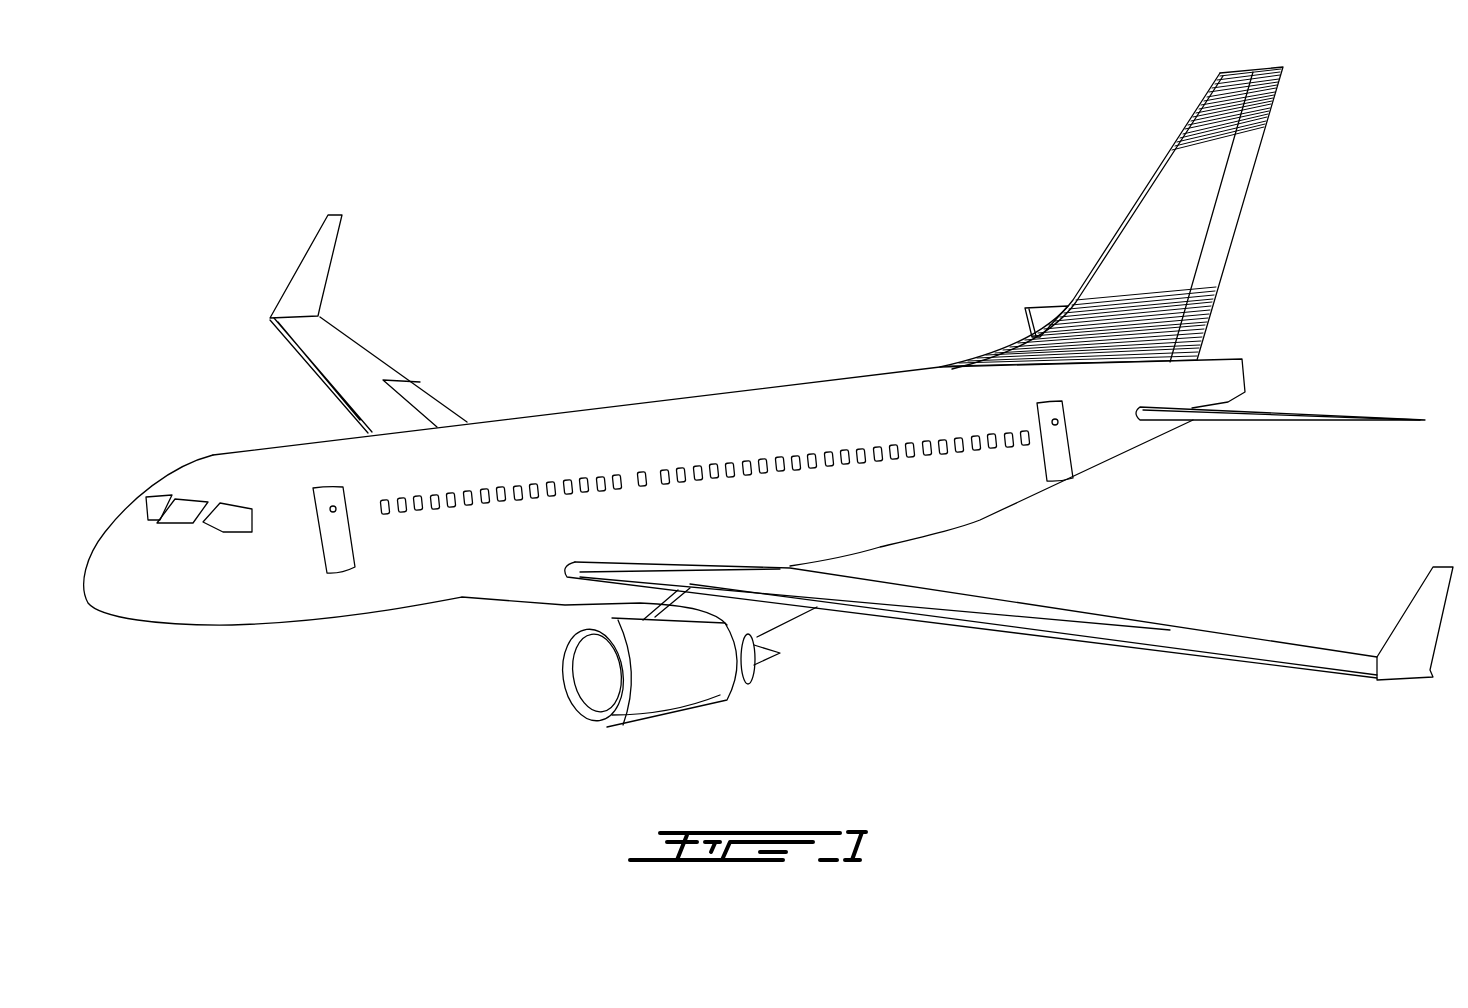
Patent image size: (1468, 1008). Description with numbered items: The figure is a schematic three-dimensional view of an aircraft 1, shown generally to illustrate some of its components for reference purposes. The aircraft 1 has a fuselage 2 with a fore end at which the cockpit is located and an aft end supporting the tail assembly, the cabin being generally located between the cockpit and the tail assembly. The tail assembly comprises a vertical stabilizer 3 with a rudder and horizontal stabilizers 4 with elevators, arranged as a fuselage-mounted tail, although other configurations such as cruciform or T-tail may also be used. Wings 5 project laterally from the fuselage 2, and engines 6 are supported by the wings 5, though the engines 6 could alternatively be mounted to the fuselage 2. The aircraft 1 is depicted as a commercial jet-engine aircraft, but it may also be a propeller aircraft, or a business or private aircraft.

The aircraft 1 is at (637, 318).
The fuselage 2 is at (408, 577).
The vertical stabilizer 3 is at (1163, 213).
The horizontal stabilizers 4 is at (1043, 318).
The wings 5 is at (353, 372).
The engines 6 is at (715, 687).